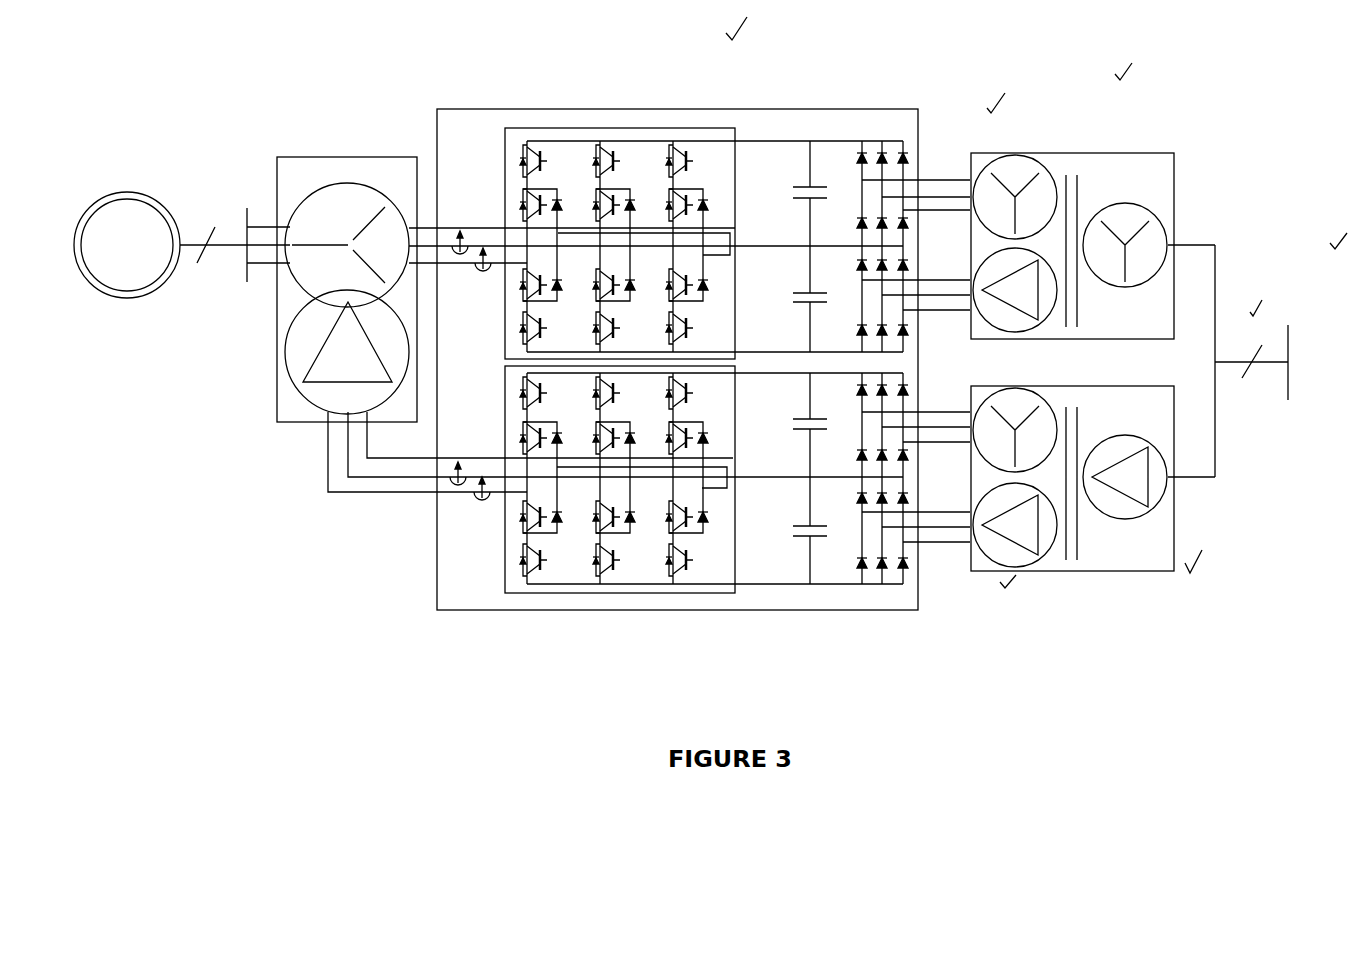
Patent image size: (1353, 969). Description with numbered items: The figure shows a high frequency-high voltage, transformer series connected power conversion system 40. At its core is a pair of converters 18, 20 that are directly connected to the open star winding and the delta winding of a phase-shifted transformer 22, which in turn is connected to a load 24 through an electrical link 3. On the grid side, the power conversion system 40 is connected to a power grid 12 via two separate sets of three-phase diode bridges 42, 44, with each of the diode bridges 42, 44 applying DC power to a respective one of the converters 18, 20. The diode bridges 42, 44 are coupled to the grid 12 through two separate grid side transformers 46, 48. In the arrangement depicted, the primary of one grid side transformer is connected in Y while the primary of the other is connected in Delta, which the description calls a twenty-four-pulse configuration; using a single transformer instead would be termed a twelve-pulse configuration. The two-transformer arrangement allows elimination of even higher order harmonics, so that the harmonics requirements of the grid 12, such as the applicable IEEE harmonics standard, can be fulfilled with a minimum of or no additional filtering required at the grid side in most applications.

The load 24 is at (127, 192).
The electrical link 3 is at (730, 290).
The phase-shifted transformer 22 is at (347, 155).
The power conversion system 40 is at (667, 88).
The converter 18 is at (500, 182).
The converter 20 is at (498, 539).
The three-phase diode bridge 42 is at (925, 163).
The three-phase diode bridge 44 is at (924, 562).
The grid side transformer 46 is at (1060, 145).
The grid side transformer 48 is at (1078, 585).
The power grid 12 is at (1290, 320).